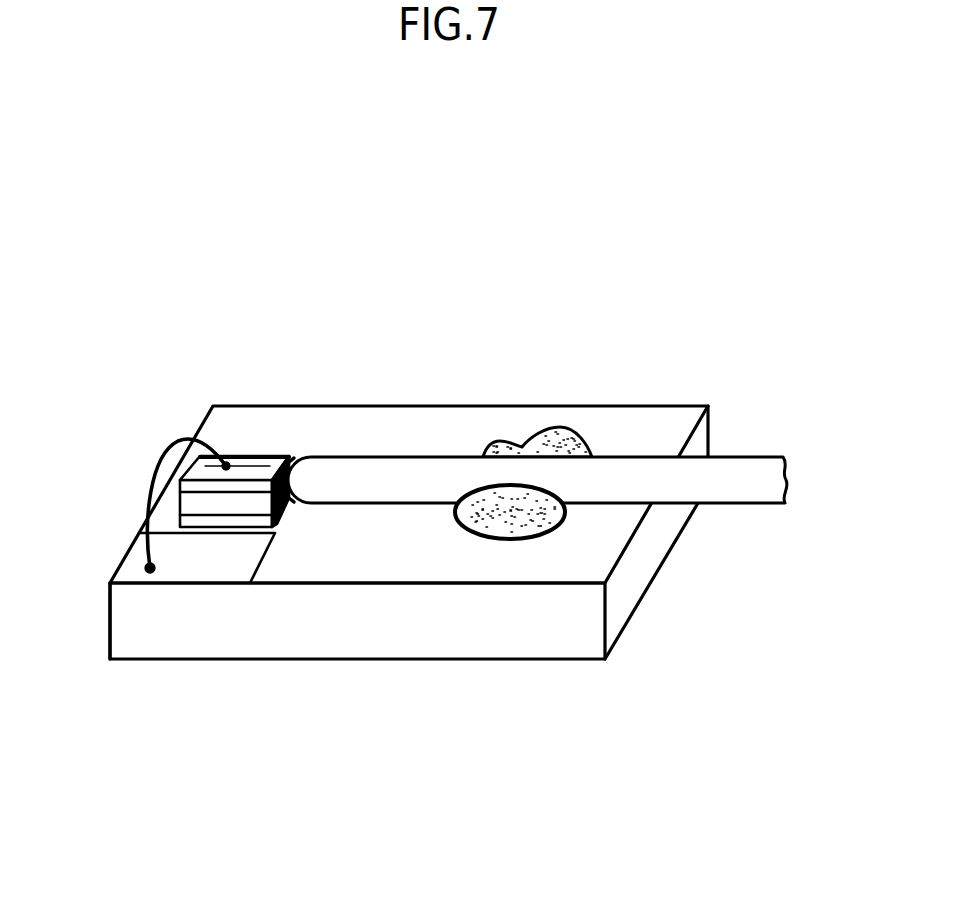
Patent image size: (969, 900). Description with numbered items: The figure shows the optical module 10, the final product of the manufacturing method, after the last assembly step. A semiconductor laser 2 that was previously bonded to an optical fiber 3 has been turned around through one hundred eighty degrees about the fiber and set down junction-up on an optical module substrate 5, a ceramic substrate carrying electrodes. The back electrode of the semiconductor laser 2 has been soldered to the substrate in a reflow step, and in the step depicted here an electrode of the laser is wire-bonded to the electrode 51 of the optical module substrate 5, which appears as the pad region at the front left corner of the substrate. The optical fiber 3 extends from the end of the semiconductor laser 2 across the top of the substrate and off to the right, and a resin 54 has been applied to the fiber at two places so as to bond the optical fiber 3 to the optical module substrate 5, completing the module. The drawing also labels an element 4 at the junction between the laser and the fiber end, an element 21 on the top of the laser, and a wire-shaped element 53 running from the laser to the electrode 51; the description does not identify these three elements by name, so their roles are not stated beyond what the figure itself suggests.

The semiconductor laser 2 is at (230, 440).
The optical fiber 3 is at (748, 448).
The fiber end face 4 is at (295, 452).
The optical module substrate 5 is at (448, 617).
The optical module 10 is at (497, 758).
The light emitting portion 21 is at (263, 468).
The electrode 51 is at (180, 567).
The bonding wire 53 is at (137, 470).
The resin 54 is at (463, 485).